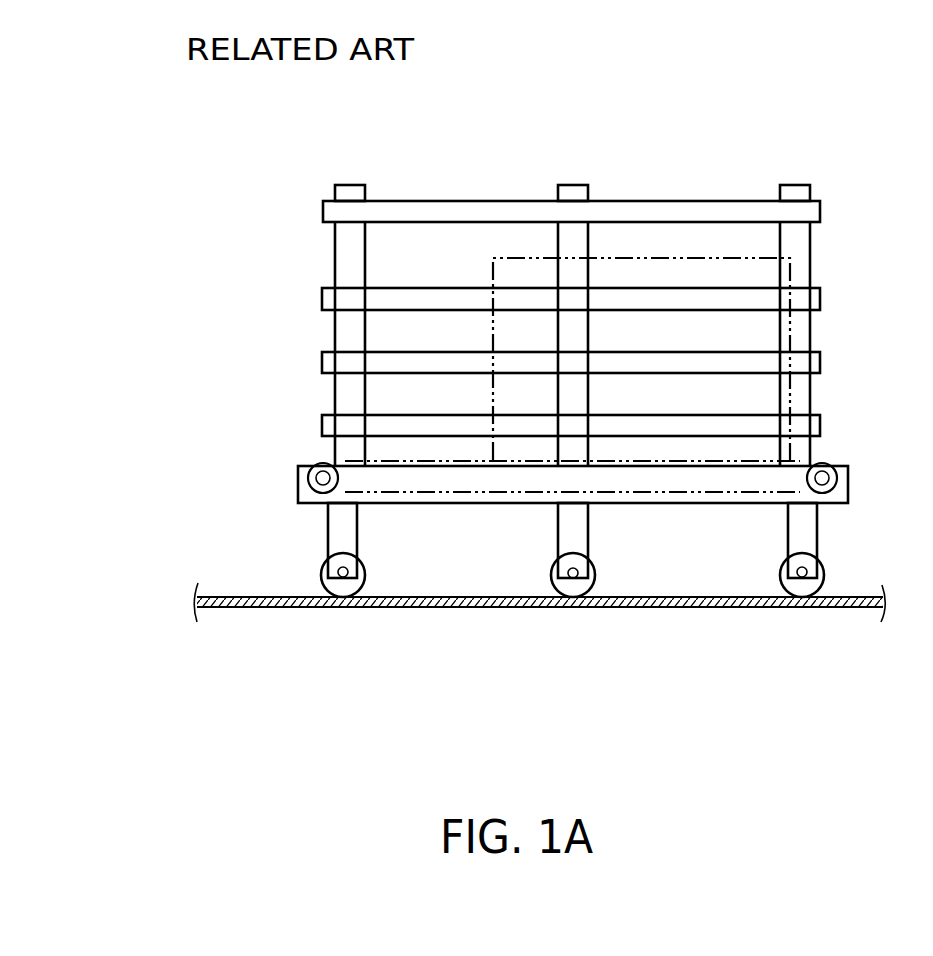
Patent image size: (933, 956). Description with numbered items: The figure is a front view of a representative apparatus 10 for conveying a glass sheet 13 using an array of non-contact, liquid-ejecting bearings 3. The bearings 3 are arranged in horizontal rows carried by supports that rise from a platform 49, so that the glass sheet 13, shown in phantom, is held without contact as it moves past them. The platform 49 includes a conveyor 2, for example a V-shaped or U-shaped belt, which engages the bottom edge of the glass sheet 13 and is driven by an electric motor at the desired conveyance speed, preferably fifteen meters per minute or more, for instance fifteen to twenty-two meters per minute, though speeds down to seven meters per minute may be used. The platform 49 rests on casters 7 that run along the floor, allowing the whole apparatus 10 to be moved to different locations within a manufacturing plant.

The apparatus 10 is at (509, 152).
The non-contact, liquid-ejecting bearings 3 is at (397, 288).
The conveyor 2 is at (318, 478).
The glass sheet 13 is at (670, 257).
The platform 49 is at (840, 467).
The casters 7 is at (803, 605).